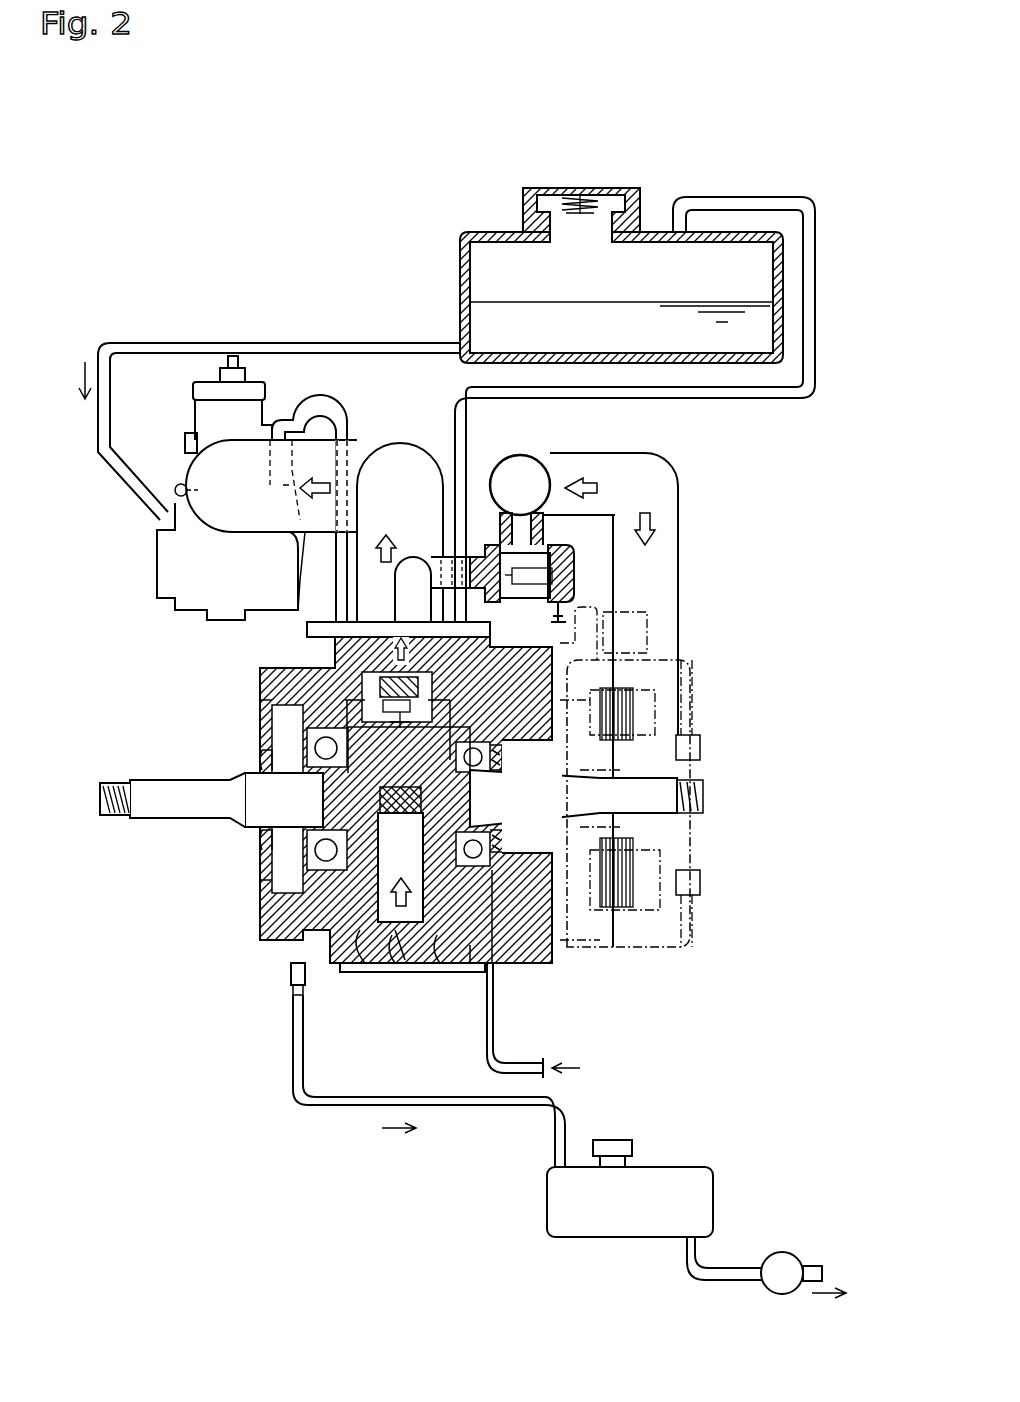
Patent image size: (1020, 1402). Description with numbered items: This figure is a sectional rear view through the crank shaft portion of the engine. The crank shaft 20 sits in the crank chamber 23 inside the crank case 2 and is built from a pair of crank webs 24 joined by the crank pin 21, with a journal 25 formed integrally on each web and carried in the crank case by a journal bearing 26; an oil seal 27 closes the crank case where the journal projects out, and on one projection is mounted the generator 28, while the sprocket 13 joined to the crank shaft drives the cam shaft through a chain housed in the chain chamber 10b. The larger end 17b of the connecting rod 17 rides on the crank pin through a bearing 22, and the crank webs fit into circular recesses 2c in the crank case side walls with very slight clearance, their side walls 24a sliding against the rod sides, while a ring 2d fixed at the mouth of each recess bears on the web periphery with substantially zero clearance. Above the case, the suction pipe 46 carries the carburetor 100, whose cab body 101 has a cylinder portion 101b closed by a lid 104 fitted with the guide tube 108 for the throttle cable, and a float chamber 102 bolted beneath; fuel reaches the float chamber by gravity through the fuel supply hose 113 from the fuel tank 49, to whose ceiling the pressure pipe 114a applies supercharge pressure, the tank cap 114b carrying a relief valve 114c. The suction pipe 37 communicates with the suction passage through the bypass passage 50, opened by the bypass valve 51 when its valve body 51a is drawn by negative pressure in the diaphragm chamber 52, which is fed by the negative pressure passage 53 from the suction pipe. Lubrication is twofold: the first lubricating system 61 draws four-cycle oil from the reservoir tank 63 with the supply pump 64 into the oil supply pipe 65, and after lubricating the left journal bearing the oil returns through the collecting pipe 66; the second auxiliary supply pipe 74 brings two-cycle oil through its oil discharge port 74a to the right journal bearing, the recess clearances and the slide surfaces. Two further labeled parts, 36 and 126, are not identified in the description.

The crank case 2 is at (282, 654).
The circular recess 2c is at (322, 942).
The ring 2d is at (402, 948).
The chain chamber 10b is at (262, 700).
The sprocket 13 is at (262, 870).
The connecting rod 17 is at (400, 867).
The larger end 17b is at (363, 640).
The crank shaft 20 is at (194, 756).
The crank pin 21 is at (396, 797).
The bearing 22 is at (480, 796).
The crank chamber 23 is at (360, 690).
The crank web 24 is at (366, 942).
The side wall 24a is at (395, 952).
The journal 25 is at (255, 818).
The journal bearing 26 is at (472, 712).
The oil seal 27 is at (262, 748).
The generator 28 is at (711, 705).
The oil pan plate 36 is at (462, 950).
The suction pipe 37 is at (690, 592).
The suction pipe 46 is at (310, 536).
The fuel tank 49 is at (462, 246).
The bypass passage 50 is at (431, 550).
The bypass valve 51 is at (572, 594).
The valve body 51a is at (527, 562).
The diaphragm chamber 52 is at (560, 552).
The negative pressure passage 53 is at (552, 614).
The first lubricating system 61 is at (694, 1153).
The first reservoir tank 63 is at (547, 1200).
The supply pump 64 is at (768, 1258).
The oil supply pipe 65 is at (812, 1262).
The collecting pipe 66 is at (478, 1107).
The second auxiliary supply pipe 74 is at (496, 1012).
The oil discharge port 74a is at (500, 845).
The carburetor 100 is at (184, 404).
The cab body 101 is at (171, 494).
The cylinder portion 101b is at (196, 415).
The float chamber 102 is at (168, 586).
The lid 104 is at (260, 386).
The guide tube 108 is at (240, 366).
The fuel supply hose 113 is at (392, 343).
The pressure pipe 114a is at (733, 396).
The tank cap 114b is at (640, 206).
The relief valve 114c is at (580, 215).
The vent pipe 126 is at (340, 408).